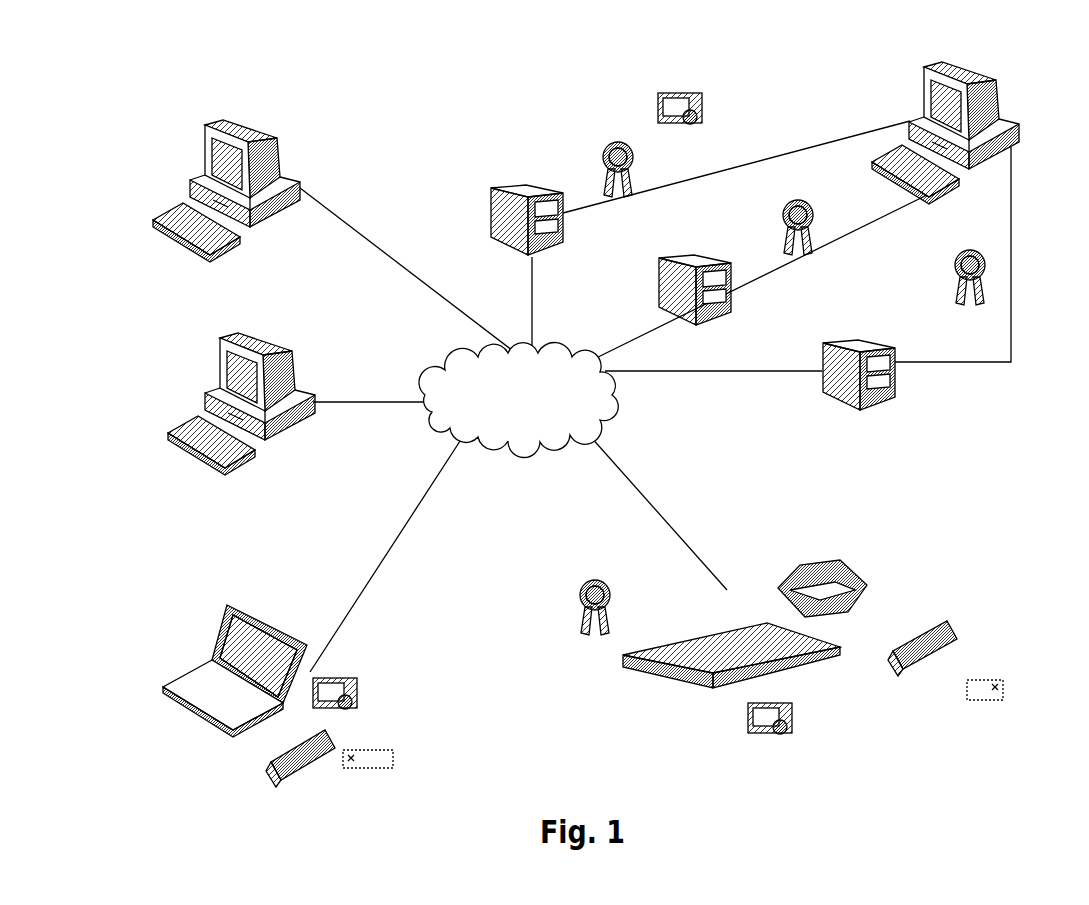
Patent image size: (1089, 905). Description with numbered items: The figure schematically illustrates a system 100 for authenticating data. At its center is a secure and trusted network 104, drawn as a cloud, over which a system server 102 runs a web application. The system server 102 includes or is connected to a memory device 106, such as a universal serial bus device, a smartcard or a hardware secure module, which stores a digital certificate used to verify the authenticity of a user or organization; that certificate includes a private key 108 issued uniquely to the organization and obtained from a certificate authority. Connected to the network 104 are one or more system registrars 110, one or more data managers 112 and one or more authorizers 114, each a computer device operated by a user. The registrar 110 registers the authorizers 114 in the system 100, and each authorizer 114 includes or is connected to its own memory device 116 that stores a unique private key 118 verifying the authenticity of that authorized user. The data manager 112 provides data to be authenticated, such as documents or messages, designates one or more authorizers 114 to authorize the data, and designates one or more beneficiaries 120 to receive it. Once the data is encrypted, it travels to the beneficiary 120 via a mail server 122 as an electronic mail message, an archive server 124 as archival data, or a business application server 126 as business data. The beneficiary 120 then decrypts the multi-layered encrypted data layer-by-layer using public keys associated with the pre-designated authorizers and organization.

The system 100 is at (134, 71).
The system server 102 is at (743, 612).
The network 104 is at (470, 356).
The memory device 106 is at (977, 657).
The private key 108 is at (737, 712).
The system registrar 110 is at (280, 162).
The data manager 112 is at (297, 355).
The authorizer 114 is at (280, 627).
The memory device 116 is at (357, 765).
The private key 118 is at (345, 673).
The beneficiary 120 is at (1008, 116).
The mail server 122 is at (500, 239).
The archive server 124 is at (658, 275).
The business application server 126 is at (830, 397).